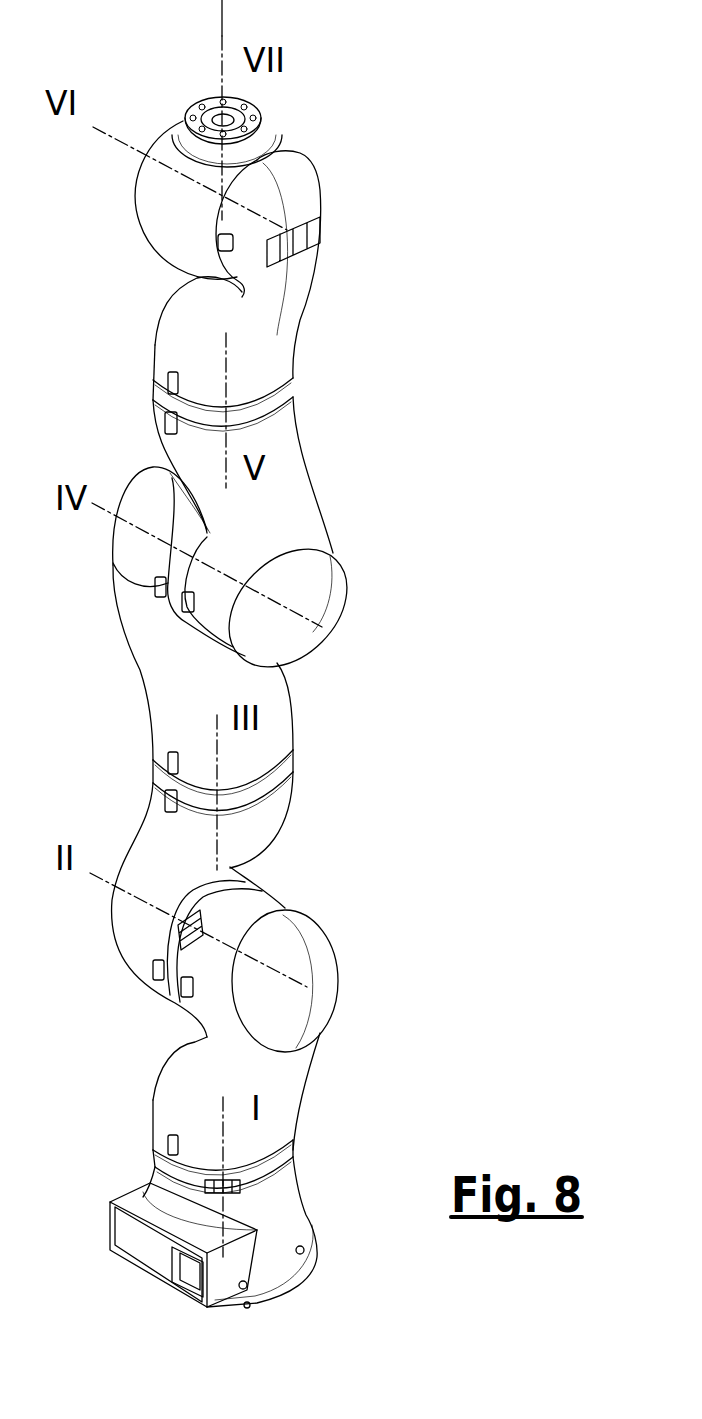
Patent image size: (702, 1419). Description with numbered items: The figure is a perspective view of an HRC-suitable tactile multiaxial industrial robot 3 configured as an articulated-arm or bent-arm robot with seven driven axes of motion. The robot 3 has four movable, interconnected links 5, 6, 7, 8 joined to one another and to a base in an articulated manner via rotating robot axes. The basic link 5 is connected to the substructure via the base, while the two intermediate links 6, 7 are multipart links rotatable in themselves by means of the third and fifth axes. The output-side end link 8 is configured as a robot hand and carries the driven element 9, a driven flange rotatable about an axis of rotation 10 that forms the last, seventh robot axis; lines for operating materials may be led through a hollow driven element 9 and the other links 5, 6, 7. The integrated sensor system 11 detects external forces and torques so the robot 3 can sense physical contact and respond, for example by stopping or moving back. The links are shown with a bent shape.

The tactile multiaxial industrial robot 3 is at (384, 711).
The basic link 5 is at (185, 1098).
The intermediate link 6 is at (172, 728).
The intermediate link 7 is at (295, 495).
The end link 8 is at (190, 204).
The driven element 9 is at (193, 113).
The axis of rotation 10 is at (218, 36).
The sensor system 11 is at (130, 383).